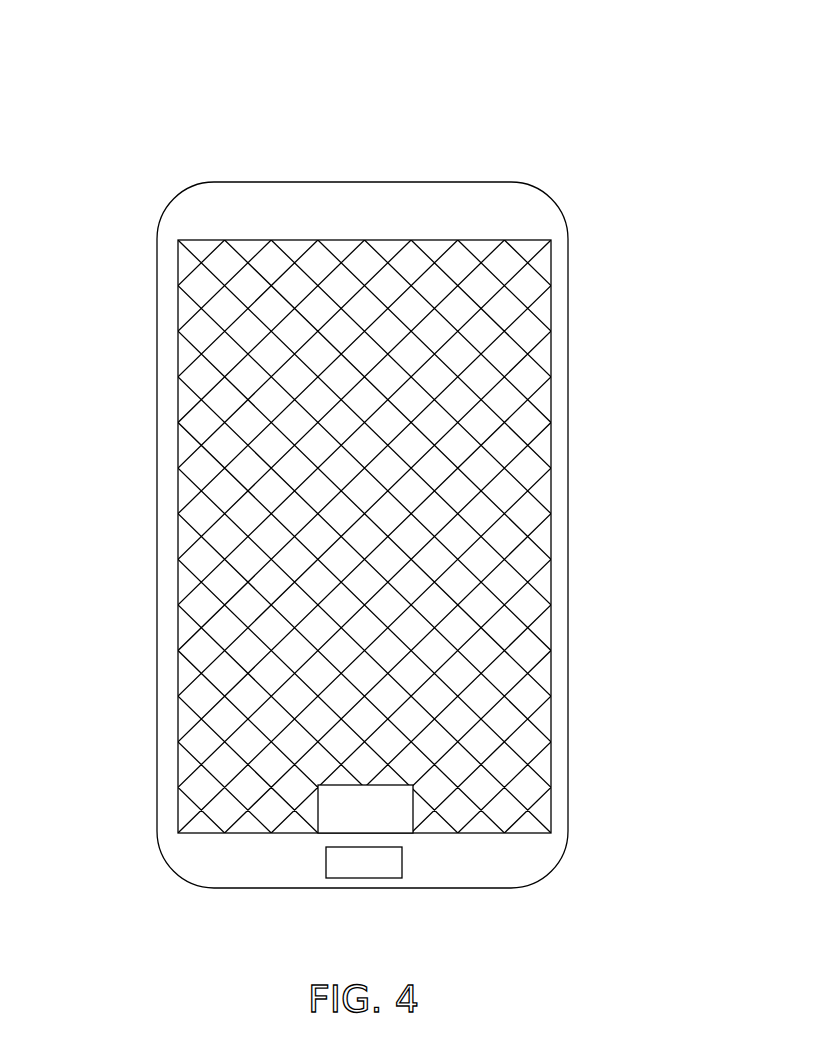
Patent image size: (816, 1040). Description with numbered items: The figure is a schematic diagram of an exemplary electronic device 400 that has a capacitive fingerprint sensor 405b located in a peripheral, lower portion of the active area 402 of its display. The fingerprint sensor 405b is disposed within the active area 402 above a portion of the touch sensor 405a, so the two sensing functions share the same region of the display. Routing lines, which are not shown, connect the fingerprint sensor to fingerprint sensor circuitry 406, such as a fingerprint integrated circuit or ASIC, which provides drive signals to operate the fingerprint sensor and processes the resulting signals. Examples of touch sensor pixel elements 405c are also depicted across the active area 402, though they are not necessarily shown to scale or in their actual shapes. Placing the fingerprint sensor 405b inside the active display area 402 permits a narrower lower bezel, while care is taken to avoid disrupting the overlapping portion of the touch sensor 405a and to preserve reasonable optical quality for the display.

The electronic device 400 is at (168, 78).
The active area 402 is at (128, 837).
The touch sensor 405a is at (552, 535).
The fingerprint sensor 405b is at (388, 809).
The touch sensor pixel elements 405c is at (410, 470).
The fingerprint sensor circuitry 406 is at (396, 886).